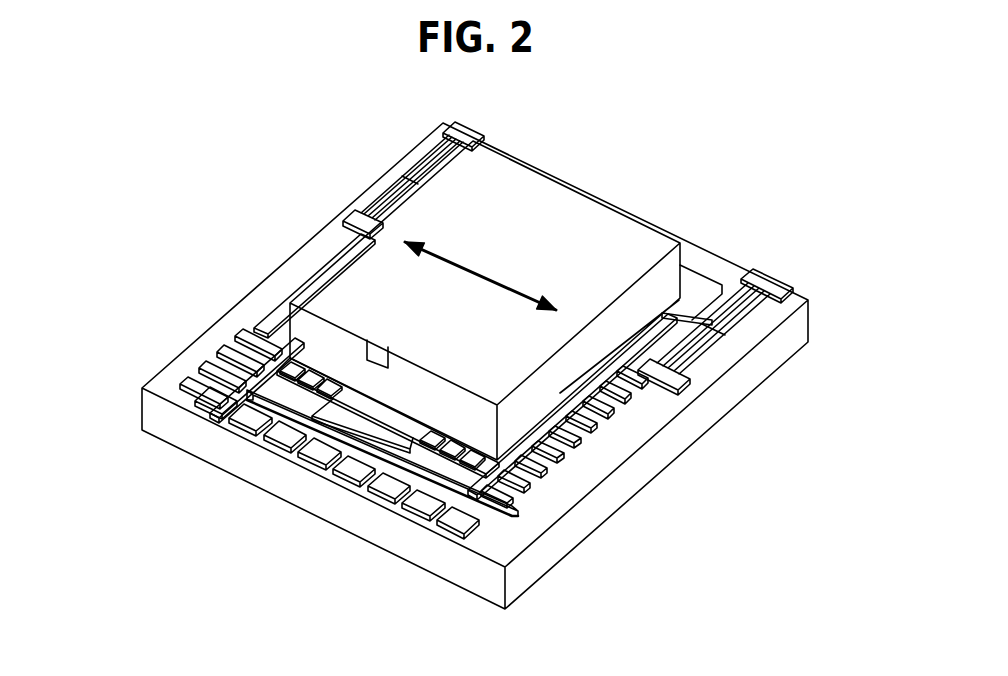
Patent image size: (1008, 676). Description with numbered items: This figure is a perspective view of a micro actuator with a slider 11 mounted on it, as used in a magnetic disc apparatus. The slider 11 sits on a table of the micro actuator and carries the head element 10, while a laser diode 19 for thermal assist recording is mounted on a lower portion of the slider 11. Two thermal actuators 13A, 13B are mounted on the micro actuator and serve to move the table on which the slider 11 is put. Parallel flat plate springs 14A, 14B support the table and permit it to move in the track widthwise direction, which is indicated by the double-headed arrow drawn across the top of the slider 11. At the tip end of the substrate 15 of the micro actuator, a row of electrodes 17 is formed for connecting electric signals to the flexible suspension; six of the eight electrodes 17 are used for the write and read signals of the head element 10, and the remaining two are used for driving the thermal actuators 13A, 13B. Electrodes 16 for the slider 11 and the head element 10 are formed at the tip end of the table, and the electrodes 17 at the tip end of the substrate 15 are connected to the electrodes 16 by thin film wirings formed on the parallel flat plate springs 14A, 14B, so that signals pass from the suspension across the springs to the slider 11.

The head element 10 is at (368, 360).
The slider 11 is at (523, 217).
The thermal actuator 13A is at (360, 213).
The thermal actuator 13B is at (683, 378).
The parallel flat plate spring 14A is at (247, 338).
The parallel flat plate spring 14B is at (575, 449).
The substrate 15 is at (497, 531).
The electrodes 16 is at (397, 503).
The electrodes 17 is at (283, 436).
The laser diode 19 is at (377, 418).